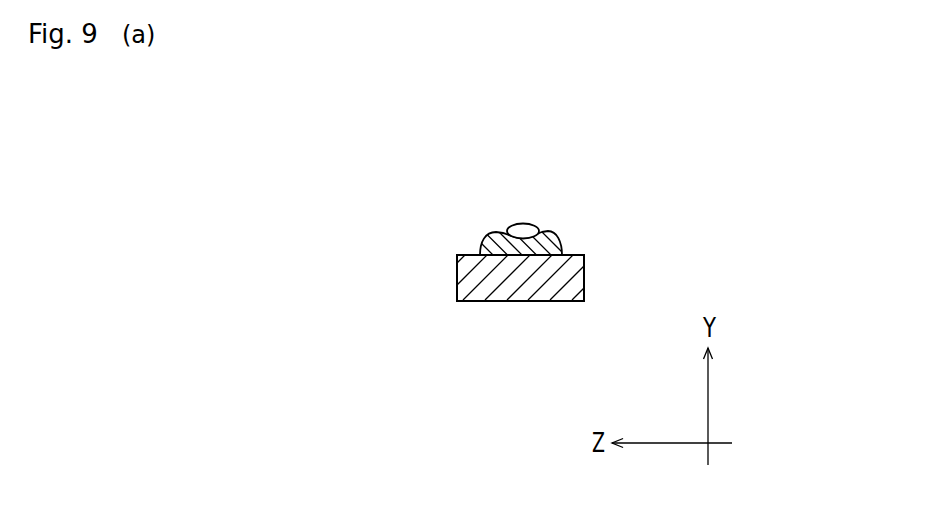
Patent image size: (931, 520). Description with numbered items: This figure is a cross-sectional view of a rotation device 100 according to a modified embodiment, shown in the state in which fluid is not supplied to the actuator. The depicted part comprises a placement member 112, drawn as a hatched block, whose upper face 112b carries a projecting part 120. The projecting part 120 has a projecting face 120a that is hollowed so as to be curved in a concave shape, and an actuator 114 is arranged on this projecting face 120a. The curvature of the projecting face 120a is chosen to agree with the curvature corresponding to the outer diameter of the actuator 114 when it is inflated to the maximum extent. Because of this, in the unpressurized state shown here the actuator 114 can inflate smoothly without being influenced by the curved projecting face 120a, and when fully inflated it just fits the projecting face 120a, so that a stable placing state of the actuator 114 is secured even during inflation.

The rotation device 100 is at (875, 441).
The placement member 112 is at (595, 265).
The upper face 112b is at (460, 253).
The actuator 114 is at (518, 205).
The projecting part 120 is at (560, 228).
The projecting face 120a is at (506, 233).